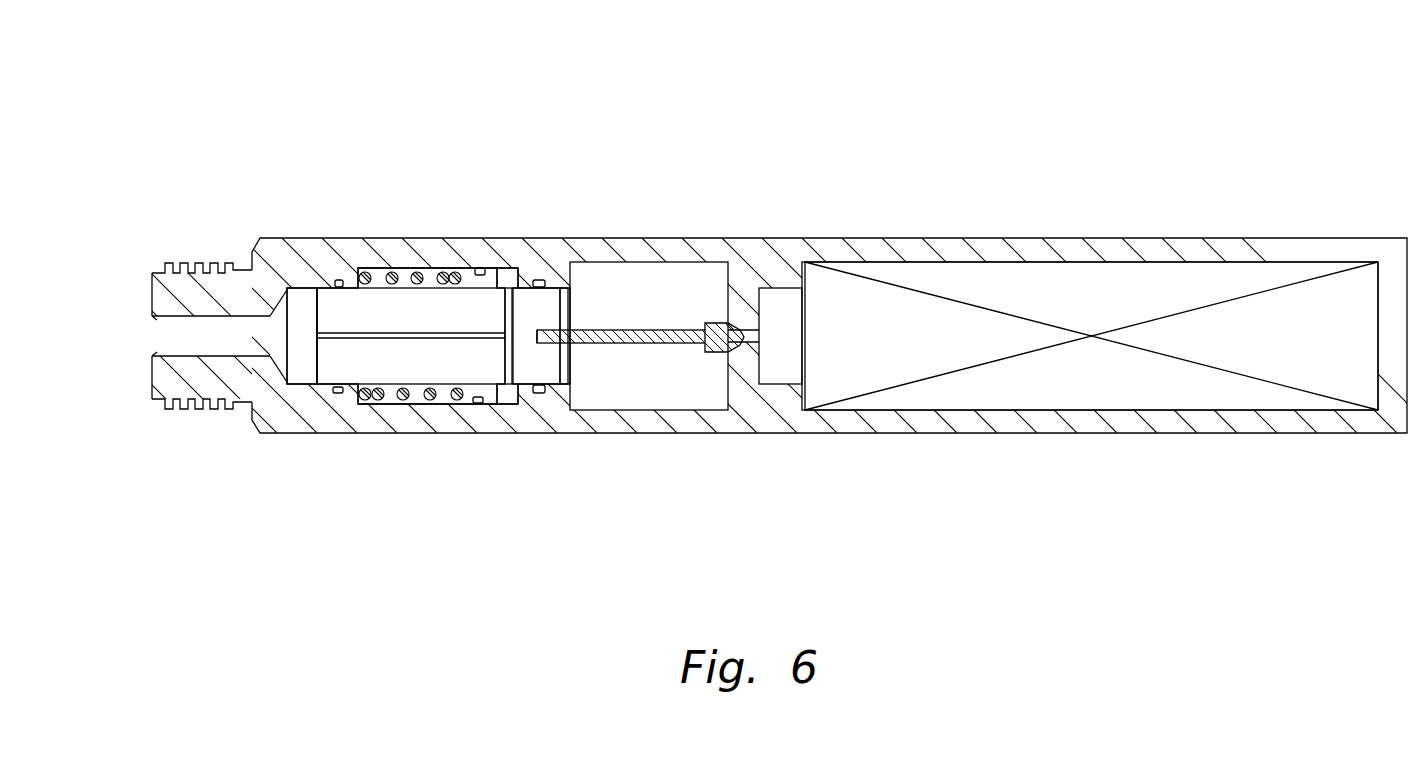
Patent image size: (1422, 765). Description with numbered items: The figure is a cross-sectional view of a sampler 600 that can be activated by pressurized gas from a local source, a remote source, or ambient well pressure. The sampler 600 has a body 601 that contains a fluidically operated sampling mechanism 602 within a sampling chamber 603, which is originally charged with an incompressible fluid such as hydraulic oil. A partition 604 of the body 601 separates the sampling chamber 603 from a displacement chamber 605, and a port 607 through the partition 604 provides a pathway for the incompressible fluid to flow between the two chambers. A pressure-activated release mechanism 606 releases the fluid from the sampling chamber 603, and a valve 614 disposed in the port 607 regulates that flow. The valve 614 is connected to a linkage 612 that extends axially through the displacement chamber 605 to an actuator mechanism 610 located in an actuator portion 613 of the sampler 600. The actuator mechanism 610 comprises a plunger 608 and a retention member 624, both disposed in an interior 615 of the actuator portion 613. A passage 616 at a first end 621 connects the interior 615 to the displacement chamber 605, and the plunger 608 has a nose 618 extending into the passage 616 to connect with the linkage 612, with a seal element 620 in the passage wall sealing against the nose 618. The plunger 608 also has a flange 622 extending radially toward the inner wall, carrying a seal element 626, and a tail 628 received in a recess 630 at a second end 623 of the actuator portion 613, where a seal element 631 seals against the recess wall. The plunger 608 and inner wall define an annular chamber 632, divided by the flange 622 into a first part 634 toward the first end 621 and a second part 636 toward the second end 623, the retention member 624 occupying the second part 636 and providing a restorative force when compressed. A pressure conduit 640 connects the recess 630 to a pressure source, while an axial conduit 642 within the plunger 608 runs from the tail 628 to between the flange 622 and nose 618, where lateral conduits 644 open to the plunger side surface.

The sampler 600 is at (1178, 68).
The body 601 is at (860, 435).
The fluidically operated sampling mechanism 602 is at (1093, 295).
The sampling chamber 603 is at (948, 262).
The partition 604 is at (763, 417).
The displacement chamber 605 is at (685, 375).
The pressure-activated release mechanism 606 is at (549, 156).
The port 607 is at (751, 330).
The plunger 608 is at (553, 393).
The actuator mechanism 610 is at (430, 274).
The linkage 612 is at (658, 330).
The actuator portion 613 is at (405, 156).
The valve 614 is at (717, 322).
The interior 615 is at (298, 303).
The passage 616 is at (522, 392).
The nose 618 is at (566, 317).
The seal element 620 is at (539, 281).
The first end 621 is at (564, 354).
The flange 622 is at (458, 277).
The second end 623 is at (252, 250).
The retention member 624 is at (386, 274).
The seal element 626 is at (479, 403).
The tail 628 is at (317, 384).
The recess 630 is at (287, 379).
The seal element 631 is at (337, 394).
The annular chamber 632 is at (360, 272).
The first part 634 is at (506, 272).
The second part 636 is at (415, 401).
The pressure conduit 640 is at (150, 341).
The axial conduit 642 is at (355, 338).
The lateral conduits 644 is at (507, 388).